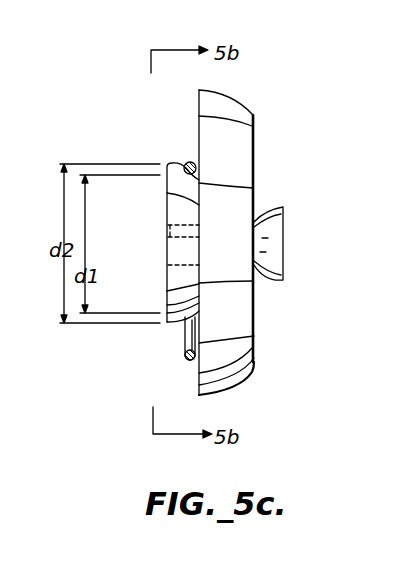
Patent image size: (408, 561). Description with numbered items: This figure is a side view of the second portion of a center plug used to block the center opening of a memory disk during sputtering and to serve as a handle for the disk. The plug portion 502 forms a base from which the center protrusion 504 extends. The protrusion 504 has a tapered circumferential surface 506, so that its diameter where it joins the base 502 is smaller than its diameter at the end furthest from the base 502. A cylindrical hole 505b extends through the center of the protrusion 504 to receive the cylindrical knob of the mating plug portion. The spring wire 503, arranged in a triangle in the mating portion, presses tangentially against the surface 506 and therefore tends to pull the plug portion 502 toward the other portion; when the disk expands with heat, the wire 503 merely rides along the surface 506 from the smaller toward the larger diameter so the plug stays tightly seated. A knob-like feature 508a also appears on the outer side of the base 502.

The plug portion 502 is at (250, 112).
The spring wire 503 is at (185, 335).
The center protrusion 504 is at (168, 282).
The cylindrical hole 505b is at (165, 228).
The tapered circumferential surface 506 is at (187, 162).
The knob 508a is at (280, 210).